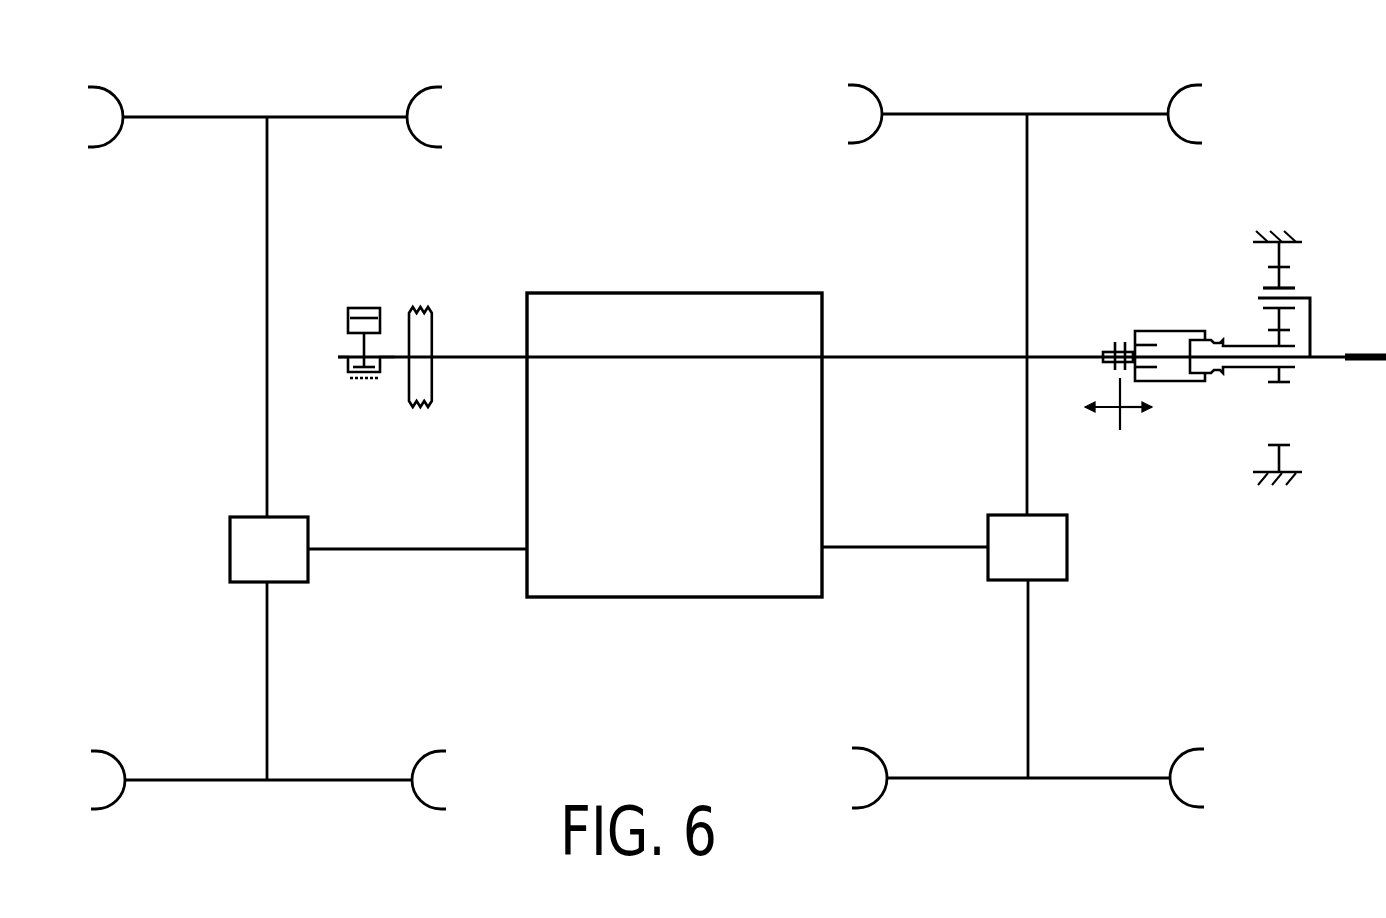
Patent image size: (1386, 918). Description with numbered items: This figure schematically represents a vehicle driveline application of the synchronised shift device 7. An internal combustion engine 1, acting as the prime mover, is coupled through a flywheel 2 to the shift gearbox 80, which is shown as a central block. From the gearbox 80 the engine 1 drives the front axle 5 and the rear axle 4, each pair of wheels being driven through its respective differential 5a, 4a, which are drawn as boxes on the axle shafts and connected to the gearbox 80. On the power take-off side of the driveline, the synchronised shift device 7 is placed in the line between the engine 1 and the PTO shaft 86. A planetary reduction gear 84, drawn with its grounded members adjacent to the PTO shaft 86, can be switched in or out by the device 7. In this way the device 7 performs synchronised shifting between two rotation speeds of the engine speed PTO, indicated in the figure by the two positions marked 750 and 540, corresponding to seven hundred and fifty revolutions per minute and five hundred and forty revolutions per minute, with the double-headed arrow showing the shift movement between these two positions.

The internal combustion engine 1 is at (356, 303).
The flywheel 2 is at (413, 305).
The rear axle 4 is at (1025, 227).
The differential 4a is at (1067, 548).
The front axle 5 is at (266, 292).
The differential 5a is at (230, 552).
The synchronised shift device 7 is at (1155, 330).
The shift gearbox 80 is at (590, 303).
The planetary reduction gear 84 is at (1225, 272).
The PTO shaft 86 is at (1356, 371).
The rotation speed 750 is at (1091, 410).
The rotation speed 540 is at (1149, 422).